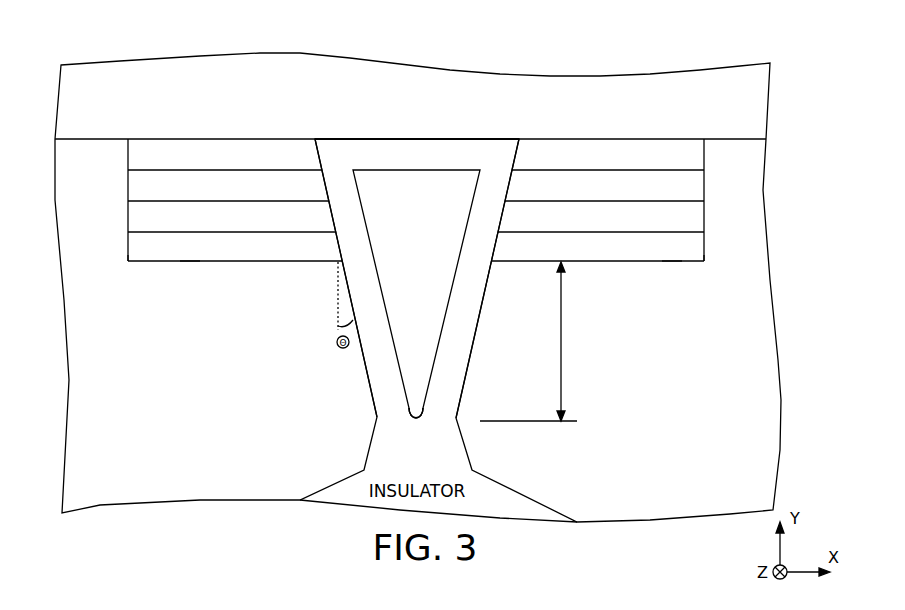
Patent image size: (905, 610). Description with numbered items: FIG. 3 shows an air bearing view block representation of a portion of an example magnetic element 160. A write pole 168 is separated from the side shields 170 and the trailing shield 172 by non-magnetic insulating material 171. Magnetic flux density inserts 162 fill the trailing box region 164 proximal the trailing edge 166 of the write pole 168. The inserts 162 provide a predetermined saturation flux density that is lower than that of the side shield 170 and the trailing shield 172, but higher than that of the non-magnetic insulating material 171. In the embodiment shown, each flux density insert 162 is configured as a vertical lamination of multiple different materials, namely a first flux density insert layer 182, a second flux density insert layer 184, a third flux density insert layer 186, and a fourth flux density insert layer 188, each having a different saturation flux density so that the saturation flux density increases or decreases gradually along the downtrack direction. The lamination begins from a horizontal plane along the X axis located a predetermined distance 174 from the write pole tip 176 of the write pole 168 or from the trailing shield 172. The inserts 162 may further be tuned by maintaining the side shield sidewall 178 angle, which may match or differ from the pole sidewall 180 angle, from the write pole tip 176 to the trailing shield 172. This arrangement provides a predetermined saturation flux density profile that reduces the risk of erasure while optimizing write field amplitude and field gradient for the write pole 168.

The magnetic write head 160 is at (94, 50).
The trailing shield 172 is at (69, 109).
The side shield 170 is at (69, 162).
The fourth flux density insert layer 188 is at (208, 164).
The third flux density insert layer 186 is at (212, 194).
The second flux density insert layer 184 is at (216, 224).
The first flux density insert layer 182 is at (220, 254).
The non-magnetic insulating material 171 is at (404, 161).
The trailing edge 166 is at (421, 171).
The write pole 168 is at (403, 277).
The side shield sidewall 178 is at (485, 292).
The pole sidewall 180 is at (397, 362).
The write pole tip 176 is at (416, 430).
The predetermined distance 174 is at (539, 341).
The magnetic flux density insert 162 is at (121, 267).
The trailing box region 164 is at (190, 262).